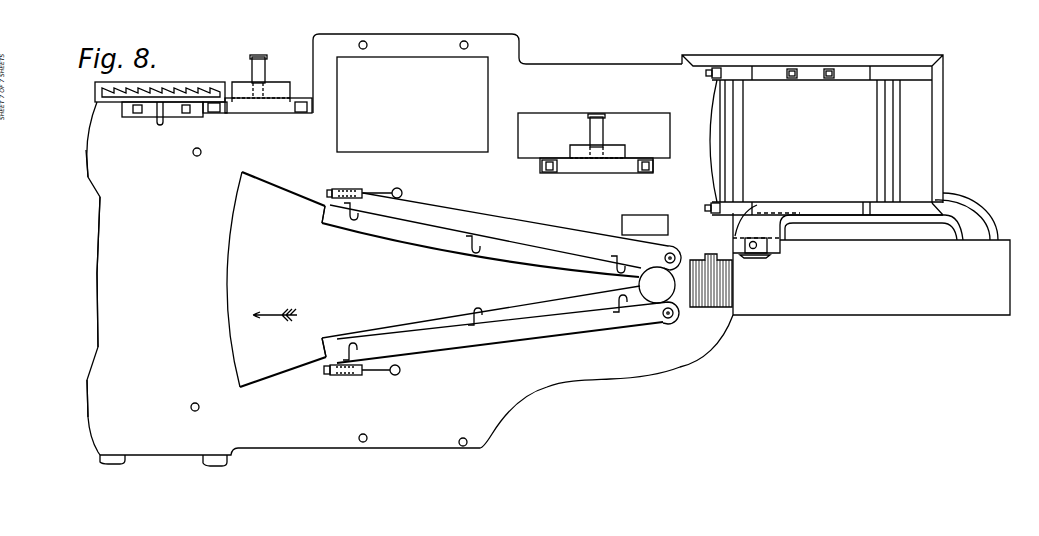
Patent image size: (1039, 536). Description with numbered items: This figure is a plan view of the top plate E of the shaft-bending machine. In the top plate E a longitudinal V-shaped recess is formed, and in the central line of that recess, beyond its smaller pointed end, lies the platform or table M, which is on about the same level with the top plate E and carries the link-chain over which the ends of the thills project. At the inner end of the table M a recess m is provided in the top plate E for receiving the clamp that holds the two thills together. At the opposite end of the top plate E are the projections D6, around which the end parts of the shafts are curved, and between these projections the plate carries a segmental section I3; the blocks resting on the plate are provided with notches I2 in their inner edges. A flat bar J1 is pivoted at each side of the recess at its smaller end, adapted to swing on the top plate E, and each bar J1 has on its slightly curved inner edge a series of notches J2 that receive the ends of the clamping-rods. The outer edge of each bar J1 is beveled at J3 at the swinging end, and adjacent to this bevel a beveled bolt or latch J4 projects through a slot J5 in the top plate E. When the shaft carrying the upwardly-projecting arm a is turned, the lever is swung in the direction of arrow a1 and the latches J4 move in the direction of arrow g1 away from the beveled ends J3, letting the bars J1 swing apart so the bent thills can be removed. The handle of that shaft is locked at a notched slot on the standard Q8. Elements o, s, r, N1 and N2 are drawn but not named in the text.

The top plate E is at (150, 281).
The projections D6 is at (88, 176).
The segmental section I3 is at (97, 268).
The notches I2 is at (183, 85).
The standard Q8 is at (112, 102).
The post o is at (265, 72).
The housing s is at (278, 88).
The base plate of housing r is at (262, 113).
The arm a is at (451, 279).
The arrow a1 is at (310, 281).
The arrow g1 is at (275, 322).
The flat bar J1 is at (505, 278).
The notches J2 is at (485, 281).
The bevel J3 is at (382, 273).
The beveled bolt or latch J4 is at (348, 189).
The slot J5 is at (327, 192).
The recess m is at (711, 280).
The platform or table M is at (871, 254).
The bearing N1 is at (755, 258).
The spring N2 is at (749, 220).